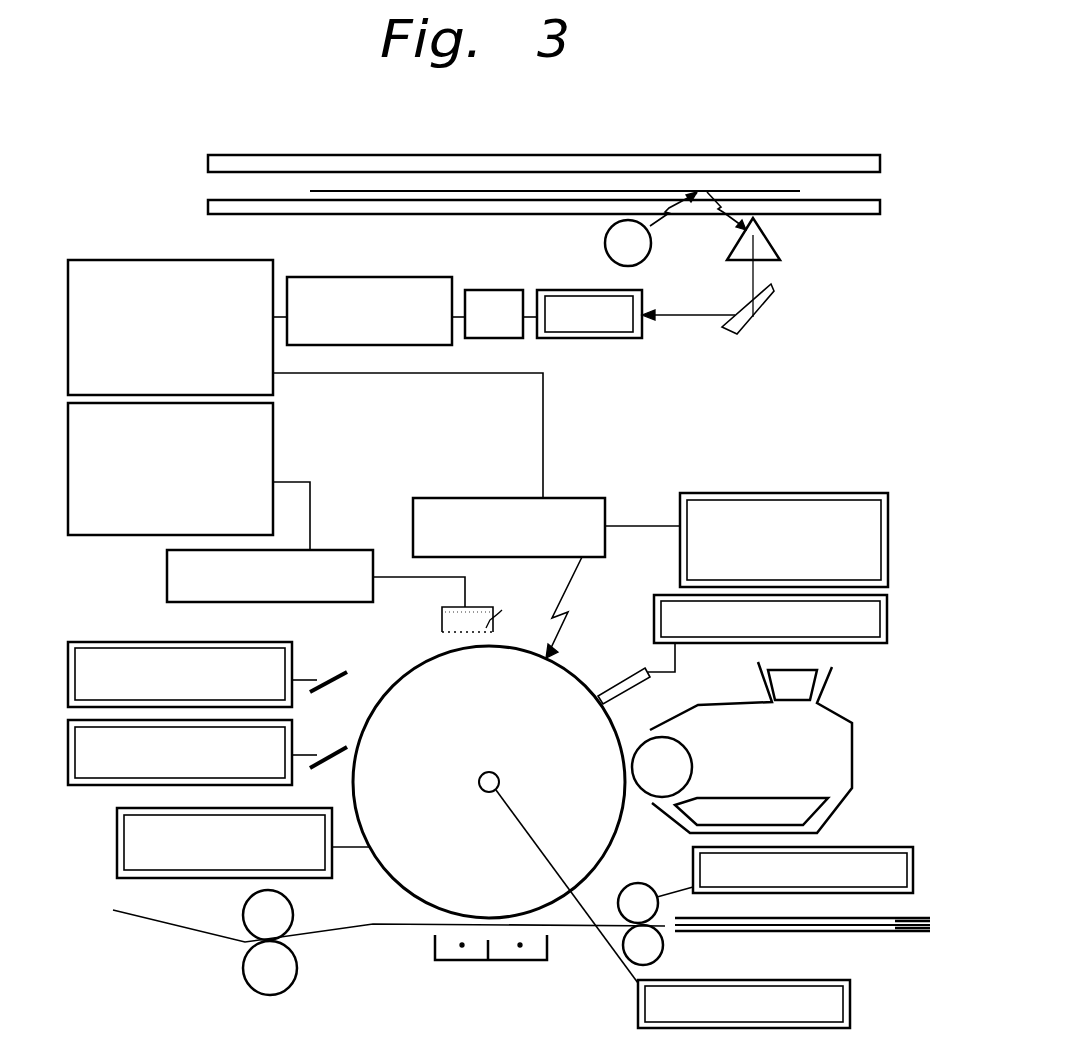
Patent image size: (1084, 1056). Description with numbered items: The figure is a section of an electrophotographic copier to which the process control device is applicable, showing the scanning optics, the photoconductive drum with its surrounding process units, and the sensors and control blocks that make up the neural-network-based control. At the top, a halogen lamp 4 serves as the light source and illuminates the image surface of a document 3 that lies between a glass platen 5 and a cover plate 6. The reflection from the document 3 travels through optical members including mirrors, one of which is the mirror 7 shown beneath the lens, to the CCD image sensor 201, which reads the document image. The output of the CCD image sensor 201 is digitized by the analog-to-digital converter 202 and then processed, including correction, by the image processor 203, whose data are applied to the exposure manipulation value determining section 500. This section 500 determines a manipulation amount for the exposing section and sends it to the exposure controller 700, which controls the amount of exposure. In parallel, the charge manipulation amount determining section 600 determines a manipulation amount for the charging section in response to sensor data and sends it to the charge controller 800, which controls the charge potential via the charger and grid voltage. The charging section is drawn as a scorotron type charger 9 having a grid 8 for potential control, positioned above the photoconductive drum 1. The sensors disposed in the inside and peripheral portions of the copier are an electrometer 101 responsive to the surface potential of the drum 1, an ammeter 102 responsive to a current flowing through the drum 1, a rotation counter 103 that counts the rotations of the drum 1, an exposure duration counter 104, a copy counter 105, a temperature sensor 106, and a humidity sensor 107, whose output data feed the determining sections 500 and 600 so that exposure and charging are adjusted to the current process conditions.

The photoconductive drum 1 is at (414, 670).
The document 3 is at (798, 194).
The halogen lamp 4 is at (651, 243).
The glass platen 5 is at (782, 252).
The cover plate 6 is at (779, 159).
The mirror 7 is at (768, 304).
The grid 8 is at (479, 605).
The scorotron type charger 9 is at (439, 614).
The electrometer 101 is at (662, 595).
The ammeter 102 is at (763, 978).
The rotation counter 103 is at (270, 808).
The exposure duration counter 104 is at (782, 493).
The copy counter 105 is at (878, 847).
The temperature sensor 106 is at (292, 742).
The humidity sensor 107 is at (100, 644).
The CCD image sensor 201 is at (596, 295).
The analog-to-digital converter 202 is at (495, 290).
The image processor 203 is at (365, 277).
The exposure manipulation value determining section 500 is at (110, 259).
The charge manipulation amount determining section 600 is at (318, 447).
The exposure controller 700 is at (588, 498).
The charge controller 800 is at (362, 550).